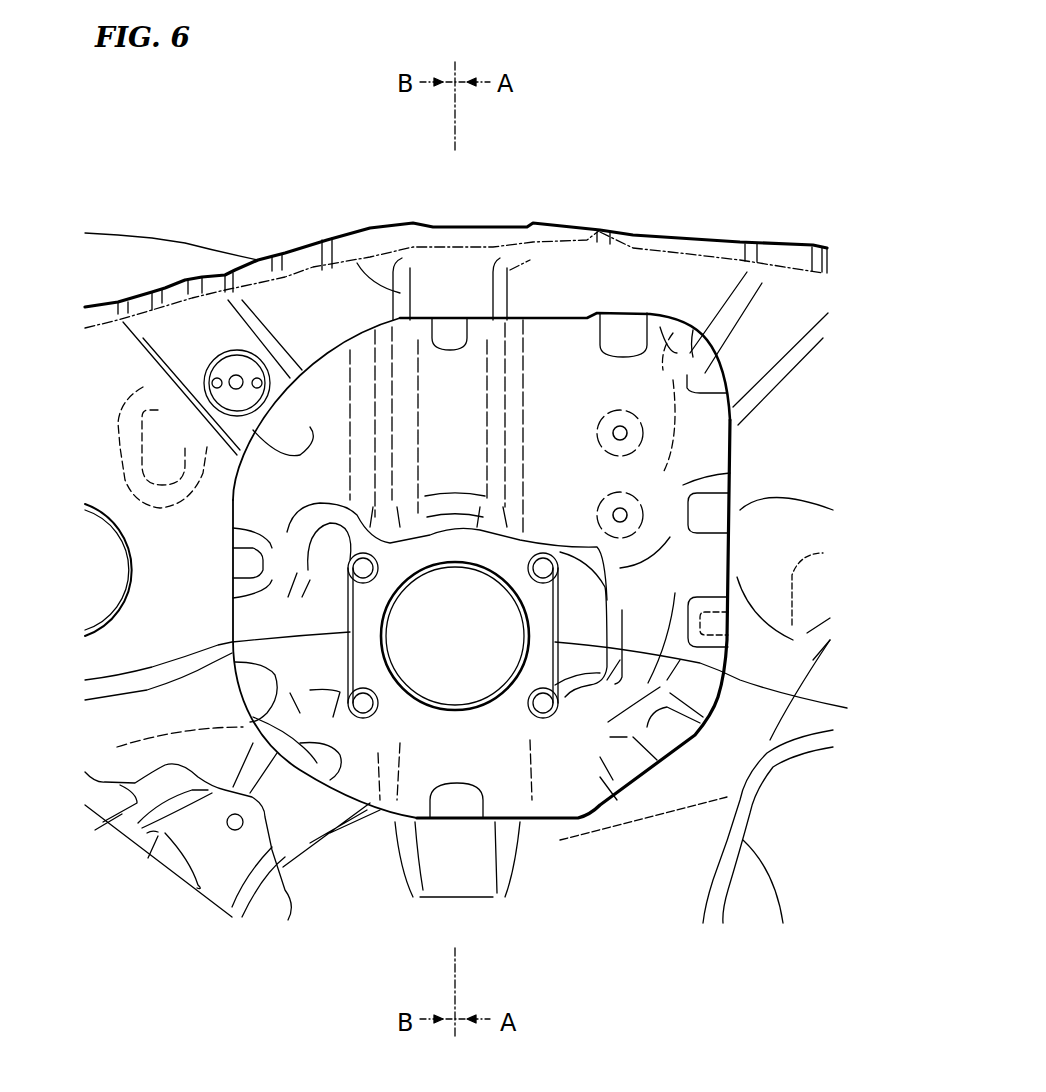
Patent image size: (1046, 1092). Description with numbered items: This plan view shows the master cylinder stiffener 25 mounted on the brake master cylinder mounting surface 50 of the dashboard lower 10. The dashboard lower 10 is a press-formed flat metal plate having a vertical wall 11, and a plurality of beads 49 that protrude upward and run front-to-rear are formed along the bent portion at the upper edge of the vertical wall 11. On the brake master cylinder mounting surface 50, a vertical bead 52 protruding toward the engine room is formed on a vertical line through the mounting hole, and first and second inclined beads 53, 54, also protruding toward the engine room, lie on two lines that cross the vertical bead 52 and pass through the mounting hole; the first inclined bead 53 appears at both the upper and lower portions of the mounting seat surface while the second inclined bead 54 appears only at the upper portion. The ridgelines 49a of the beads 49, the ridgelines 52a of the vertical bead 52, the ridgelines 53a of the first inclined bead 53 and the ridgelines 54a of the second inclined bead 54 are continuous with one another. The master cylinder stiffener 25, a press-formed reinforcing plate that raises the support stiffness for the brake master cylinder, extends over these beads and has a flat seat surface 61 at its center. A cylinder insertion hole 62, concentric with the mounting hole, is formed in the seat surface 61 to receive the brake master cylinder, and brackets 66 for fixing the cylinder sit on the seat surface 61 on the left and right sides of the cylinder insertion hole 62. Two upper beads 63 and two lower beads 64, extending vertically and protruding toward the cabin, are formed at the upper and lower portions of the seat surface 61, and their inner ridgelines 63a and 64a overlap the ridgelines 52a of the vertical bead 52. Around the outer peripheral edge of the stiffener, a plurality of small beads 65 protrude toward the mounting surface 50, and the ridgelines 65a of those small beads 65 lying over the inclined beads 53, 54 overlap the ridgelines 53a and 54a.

The dashboard lower 10 is at (806, 429).
The vertical wall 11 is at (797, 478).
The master cylinder stiffener 25 is at (361, 329).
The beads 49 is at (258, 258).
The ridgelines of the beads 49a is at (228, 282).
The brake master cylinder mounting surface 50 is at (560, 307).
The vertical bead 52 is at (461, 284).
The ridgelines of the vertical bead 52a is at (380, 320).
The first inclined bead 53 is at (185, 327).
The ridgelines of the first inclined bead 53a is at (277, 343).
The second inclined bead 54 is at (800, 303).
The ridgelines of the second inclined bead 54a is at (730, 283).
The seat surface 61 is at (585, 620).
The cylinder insertion hole 62 is at (522, 623).
The upper beads 63 is at (513, 450).
The ridgelines of the upper beads 63a is at (487, 423).
The lower beads 64 is at (392, 823).
The ridgelines of the lower beads 64a is at (497, 775).
The small beads 65 is at (707, 373).
The ridgelines of the small beads 65a is at (690, 330).
The brackets 66 is at (85, 680).